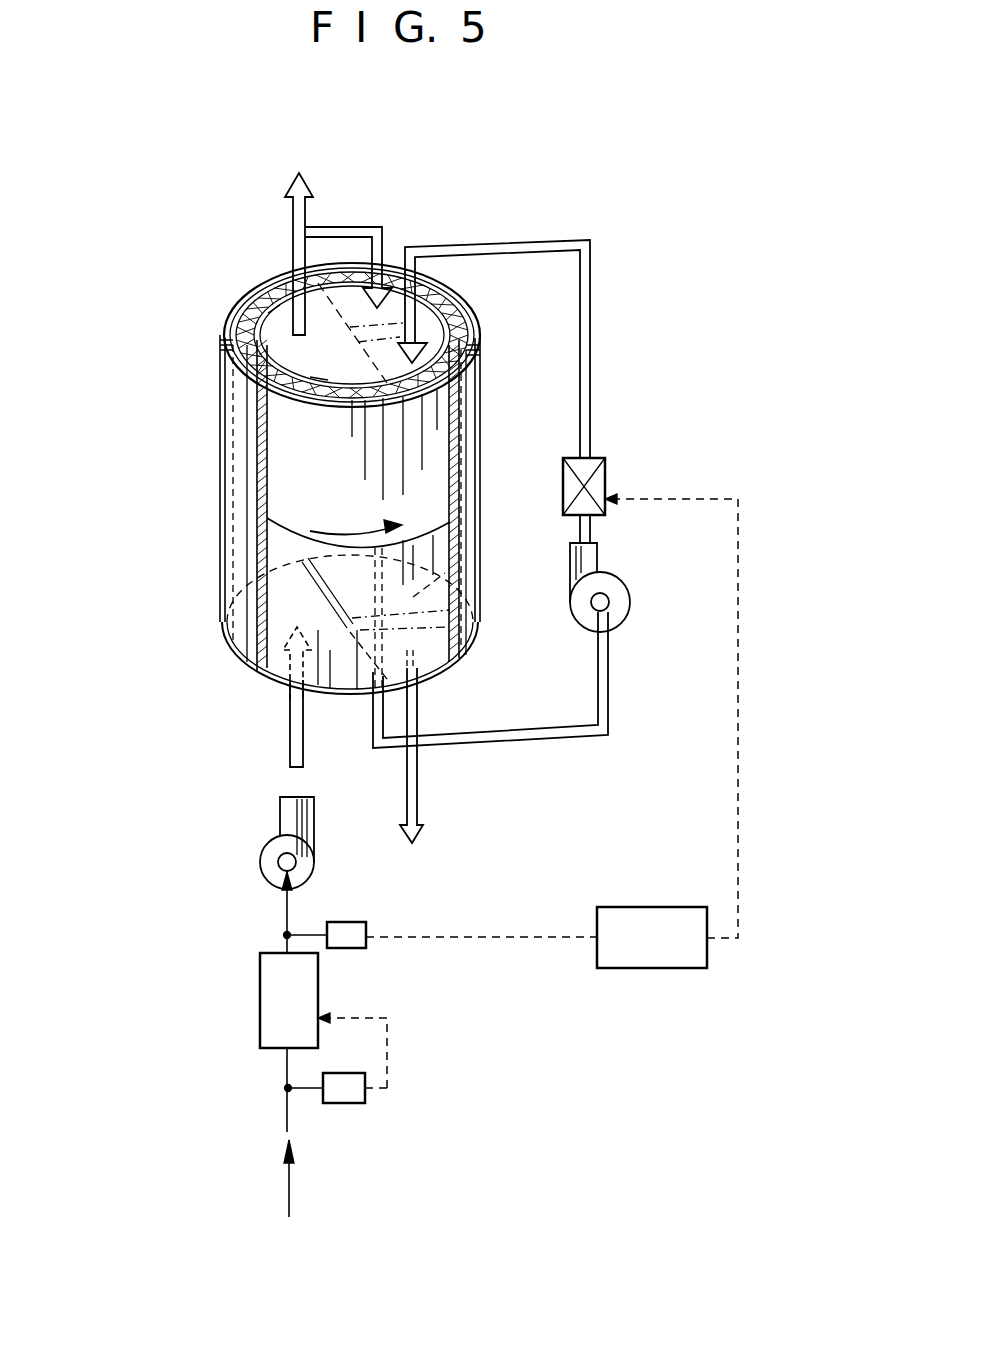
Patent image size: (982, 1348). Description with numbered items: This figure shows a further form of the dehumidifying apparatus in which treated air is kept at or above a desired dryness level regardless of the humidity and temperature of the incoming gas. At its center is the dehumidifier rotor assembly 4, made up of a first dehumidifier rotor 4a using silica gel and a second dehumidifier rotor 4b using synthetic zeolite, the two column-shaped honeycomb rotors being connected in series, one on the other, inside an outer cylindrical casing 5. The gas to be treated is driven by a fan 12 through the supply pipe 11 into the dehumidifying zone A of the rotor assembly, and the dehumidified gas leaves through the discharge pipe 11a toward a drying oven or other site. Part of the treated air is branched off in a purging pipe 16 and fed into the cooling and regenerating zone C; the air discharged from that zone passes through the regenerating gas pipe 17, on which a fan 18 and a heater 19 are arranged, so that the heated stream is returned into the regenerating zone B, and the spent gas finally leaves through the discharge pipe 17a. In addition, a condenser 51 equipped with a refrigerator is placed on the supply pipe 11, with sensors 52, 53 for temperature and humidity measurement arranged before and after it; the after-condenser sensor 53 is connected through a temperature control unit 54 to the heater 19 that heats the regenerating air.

The dehumidifier rotor assembly 4 is at (206, 497).
The first dehumidifier rotor 4a is at (283, 598).
The second dehumidifier rotor 4b is at (275, 455).
The outer cylindrical casing 5 is at (218, 378).
The pipe for supply of the gas to be treated 11 is at (293, 740).
The pipe for discharge of treated gas 11a is at (290, 216).
The fan 12 is at (262, 858).
The purging pipe 16 is at (343, 227).
The pipe for supply of adsorbent regenerating gas 17 is at (590, 363).
The discharge pipe 17a is at (417, 803).
The fan 18 is at (620, 598).
The heater 19 is at (600, 478).
The condenser 51 is at (262, 1000).
The sensor 52 is at (352, 1090).
The sensor 53 is at (357, 940).
The temperature control unit 54 is at (677, 953).
The dehumidifying zone A is at (247, 300).
The regenerating zone B is at (457, 349).
The cooling and regenerating zone C is at (400, 268).